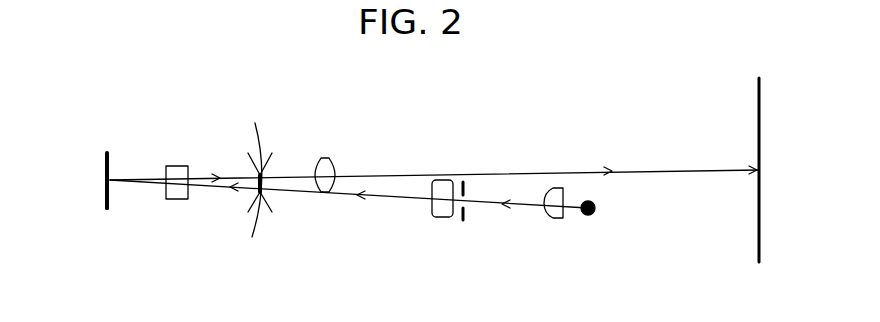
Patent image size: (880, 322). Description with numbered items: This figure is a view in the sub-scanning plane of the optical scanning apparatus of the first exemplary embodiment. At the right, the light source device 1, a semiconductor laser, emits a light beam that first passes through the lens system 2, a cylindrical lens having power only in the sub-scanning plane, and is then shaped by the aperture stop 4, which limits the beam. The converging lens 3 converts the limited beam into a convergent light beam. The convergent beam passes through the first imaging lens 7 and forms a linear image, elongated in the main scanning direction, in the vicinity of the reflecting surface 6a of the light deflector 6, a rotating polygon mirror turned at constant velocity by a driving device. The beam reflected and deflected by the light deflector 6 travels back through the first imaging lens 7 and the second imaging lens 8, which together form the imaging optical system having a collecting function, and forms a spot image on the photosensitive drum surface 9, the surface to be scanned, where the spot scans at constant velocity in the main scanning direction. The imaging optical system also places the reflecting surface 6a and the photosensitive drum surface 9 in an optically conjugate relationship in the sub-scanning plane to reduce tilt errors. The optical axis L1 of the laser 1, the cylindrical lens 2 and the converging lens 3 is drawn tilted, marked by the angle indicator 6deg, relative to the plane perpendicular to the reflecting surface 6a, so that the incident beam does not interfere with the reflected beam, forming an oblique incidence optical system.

The light source device 1 is at (589, 215).
The lens system 2 is at (545, 219).
The converging lens 3 is at (433, 218).
The aperture stop 4 is at (462, 222).
The light deflector 6 is at (105, 165).
The reflecting surface 6a is at (110, 197).
The tilt angle of 6 degrees 6deg is at (250, 167).
The first imaging lens 7 is at (178, 165).
The second imaging lens 8 is at (332, 158).
The photosensitive drum surface 9 is at (761, 220).
The optical axis L1 is at (288, 193).